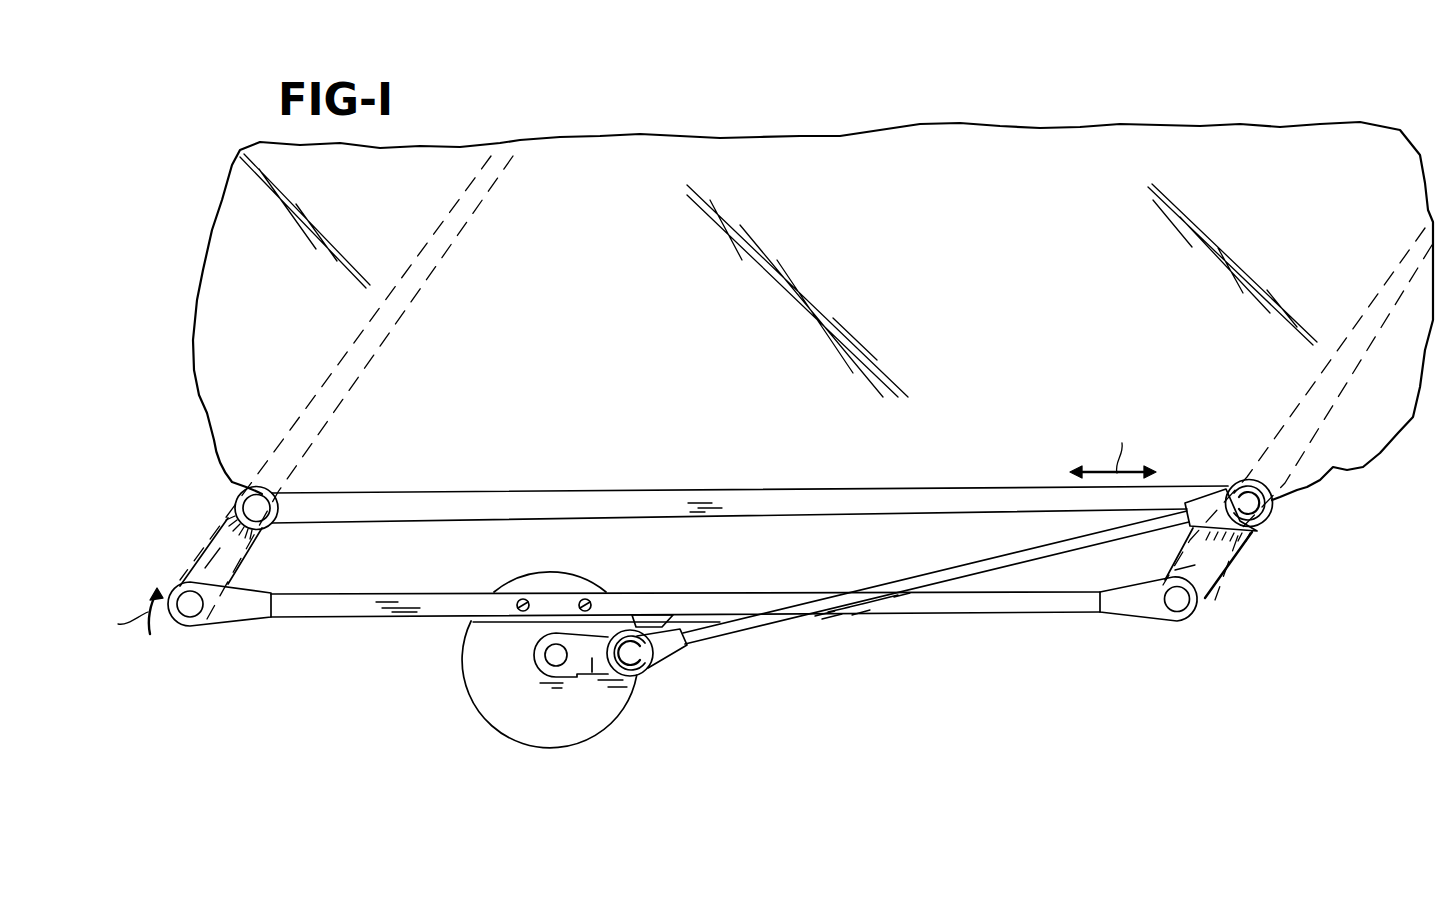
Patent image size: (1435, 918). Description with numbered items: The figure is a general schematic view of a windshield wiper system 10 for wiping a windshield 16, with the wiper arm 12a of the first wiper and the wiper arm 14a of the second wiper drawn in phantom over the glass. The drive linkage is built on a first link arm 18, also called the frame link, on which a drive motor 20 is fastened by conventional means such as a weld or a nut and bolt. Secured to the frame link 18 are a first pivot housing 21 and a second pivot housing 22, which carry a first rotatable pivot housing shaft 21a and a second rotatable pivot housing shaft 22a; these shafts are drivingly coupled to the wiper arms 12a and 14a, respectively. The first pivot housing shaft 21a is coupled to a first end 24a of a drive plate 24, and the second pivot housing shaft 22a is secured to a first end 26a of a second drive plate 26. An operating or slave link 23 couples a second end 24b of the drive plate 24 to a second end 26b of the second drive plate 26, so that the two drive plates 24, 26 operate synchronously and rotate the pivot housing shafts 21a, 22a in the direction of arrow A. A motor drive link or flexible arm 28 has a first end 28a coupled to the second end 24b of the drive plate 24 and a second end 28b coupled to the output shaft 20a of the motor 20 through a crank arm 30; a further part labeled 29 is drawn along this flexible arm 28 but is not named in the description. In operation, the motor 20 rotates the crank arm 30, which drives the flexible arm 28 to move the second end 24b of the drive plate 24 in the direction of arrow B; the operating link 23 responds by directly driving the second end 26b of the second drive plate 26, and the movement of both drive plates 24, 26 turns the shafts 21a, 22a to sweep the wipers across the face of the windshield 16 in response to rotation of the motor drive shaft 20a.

The windshield wiper system 10 is at (749, 471).
The wiper arm 12a is at (1386, 268).
The wiper arm 14a is at (447, 243).
The windshield 16 is at (795, 148).
The first link arm 18 is at (378, 602).
The drive motor 20 is at (567, 720).
The output shaft 20a is at (552, 653).
The first pivot housing 21 is at (1137, 607).
The first rotatable pivot housing shaft 21a is at (1180, 604).
The second pivot housing 22 is at (248, 612).
The second rotatable pivot housing shaft 22a is at (195, 612).
The operating link 23 is at (481, 498).
The drive plate 24 is at (1223, 552).
The first end of drive plate 24a is at (1207, 583).
The second end of drive plate 24b is at (1257, 531).
The second drive plate 26 is at (222, 538).
The first end of second drive plate 26a is at (193, 575).
The second end of second drive plate 26b is at (232, 491).
The motor drive link 28 is at (936, 586).
The first end of flexible arm 28a is at (1203, 508).
The second end of flexible arm 28b is at (660, 634).
The connecting rod 29 is at (938, 577).
The crank arm 30 is at (595, 680).